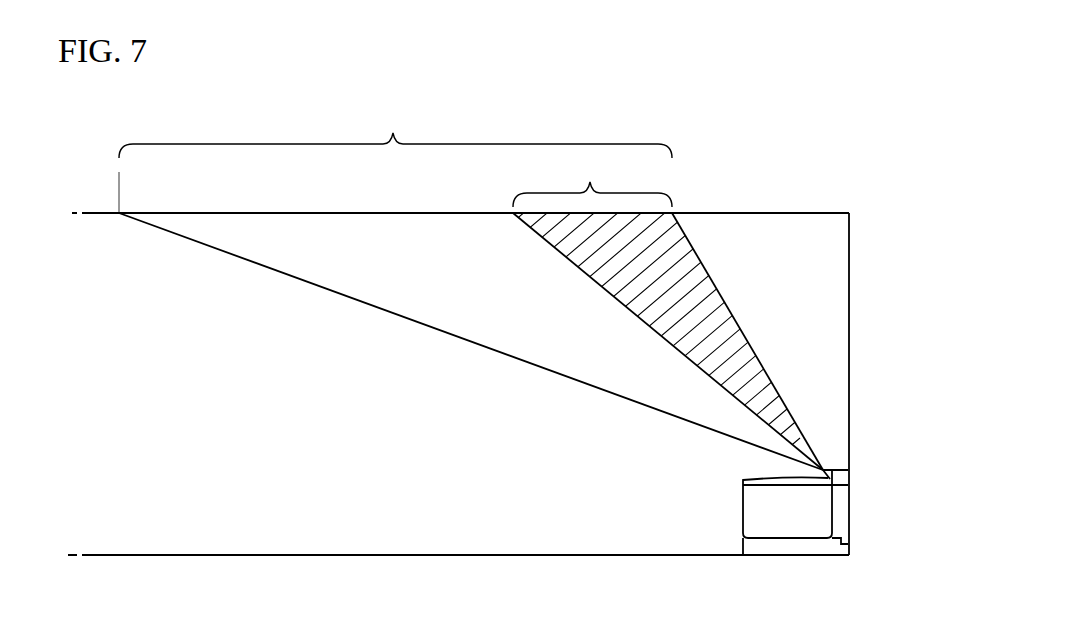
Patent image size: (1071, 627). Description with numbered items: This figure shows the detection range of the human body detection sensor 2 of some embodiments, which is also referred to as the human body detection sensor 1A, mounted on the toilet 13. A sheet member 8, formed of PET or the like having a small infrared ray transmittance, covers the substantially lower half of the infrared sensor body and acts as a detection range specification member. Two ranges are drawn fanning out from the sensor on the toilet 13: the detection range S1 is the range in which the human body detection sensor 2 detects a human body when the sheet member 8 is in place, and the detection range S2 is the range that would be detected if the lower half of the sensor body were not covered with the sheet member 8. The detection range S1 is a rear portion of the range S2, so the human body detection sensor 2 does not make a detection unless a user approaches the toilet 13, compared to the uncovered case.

The human body detection sensor 2 is at (858, 453).
The sheet member 8 is at (858, 453).
The human body detection sensor 1A is at (823, 470).
The toilet 13 is at (852, 512).
The detection range S1 is at (592, 177).
The detection range S2 is at (395, 156).